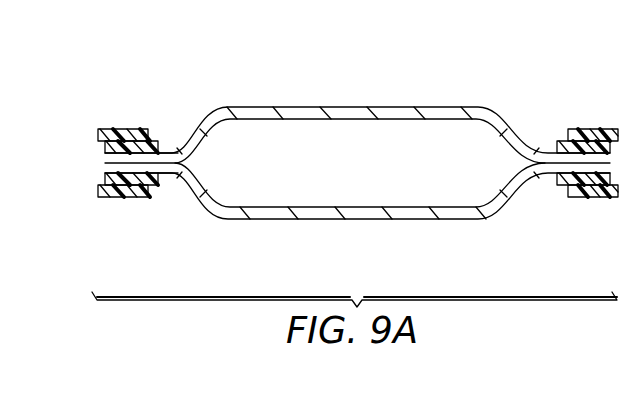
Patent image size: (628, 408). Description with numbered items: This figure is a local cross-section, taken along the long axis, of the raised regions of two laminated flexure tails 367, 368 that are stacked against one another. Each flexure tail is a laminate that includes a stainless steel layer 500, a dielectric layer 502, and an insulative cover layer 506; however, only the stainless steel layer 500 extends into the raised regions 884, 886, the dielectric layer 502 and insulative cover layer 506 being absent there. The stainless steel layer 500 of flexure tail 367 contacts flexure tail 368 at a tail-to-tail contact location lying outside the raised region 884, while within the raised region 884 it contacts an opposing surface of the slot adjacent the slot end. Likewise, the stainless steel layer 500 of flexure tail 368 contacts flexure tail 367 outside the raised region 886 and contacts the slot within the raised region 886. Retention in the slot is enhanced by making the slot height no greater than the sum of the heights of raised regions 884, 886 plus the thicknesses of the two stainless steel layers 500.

The stainless steel layer 500 is at (174, 158).
The dielectric layer 502 is at (104, 145).
The insulative cover layer 506 is at (133, 140).
The raised region 884 is at (348, 107).
The raised region 886 is at (357, 207).
The flexure tail 367 is at (560, 104).
The flexure tail 368 is at (560, 226).